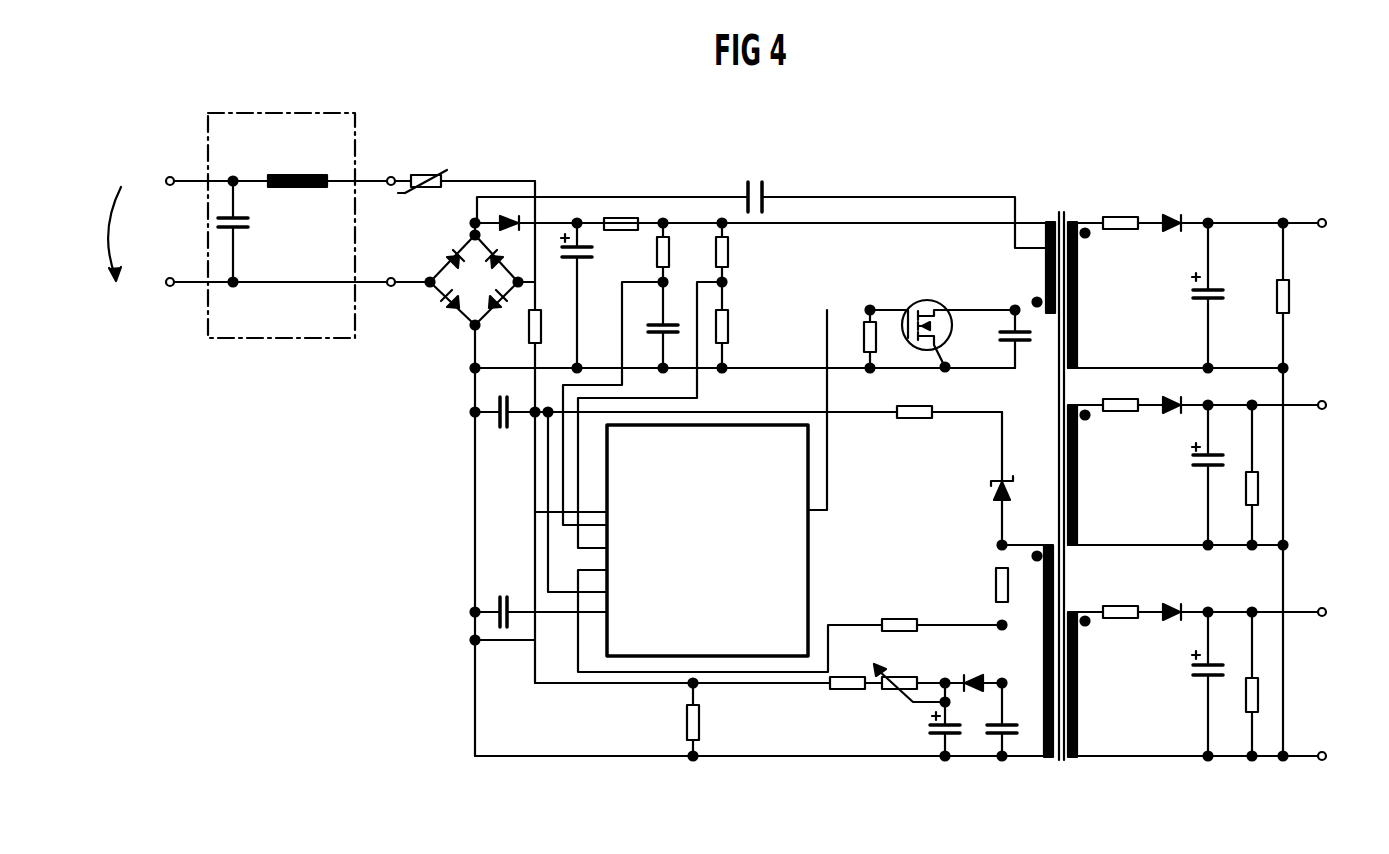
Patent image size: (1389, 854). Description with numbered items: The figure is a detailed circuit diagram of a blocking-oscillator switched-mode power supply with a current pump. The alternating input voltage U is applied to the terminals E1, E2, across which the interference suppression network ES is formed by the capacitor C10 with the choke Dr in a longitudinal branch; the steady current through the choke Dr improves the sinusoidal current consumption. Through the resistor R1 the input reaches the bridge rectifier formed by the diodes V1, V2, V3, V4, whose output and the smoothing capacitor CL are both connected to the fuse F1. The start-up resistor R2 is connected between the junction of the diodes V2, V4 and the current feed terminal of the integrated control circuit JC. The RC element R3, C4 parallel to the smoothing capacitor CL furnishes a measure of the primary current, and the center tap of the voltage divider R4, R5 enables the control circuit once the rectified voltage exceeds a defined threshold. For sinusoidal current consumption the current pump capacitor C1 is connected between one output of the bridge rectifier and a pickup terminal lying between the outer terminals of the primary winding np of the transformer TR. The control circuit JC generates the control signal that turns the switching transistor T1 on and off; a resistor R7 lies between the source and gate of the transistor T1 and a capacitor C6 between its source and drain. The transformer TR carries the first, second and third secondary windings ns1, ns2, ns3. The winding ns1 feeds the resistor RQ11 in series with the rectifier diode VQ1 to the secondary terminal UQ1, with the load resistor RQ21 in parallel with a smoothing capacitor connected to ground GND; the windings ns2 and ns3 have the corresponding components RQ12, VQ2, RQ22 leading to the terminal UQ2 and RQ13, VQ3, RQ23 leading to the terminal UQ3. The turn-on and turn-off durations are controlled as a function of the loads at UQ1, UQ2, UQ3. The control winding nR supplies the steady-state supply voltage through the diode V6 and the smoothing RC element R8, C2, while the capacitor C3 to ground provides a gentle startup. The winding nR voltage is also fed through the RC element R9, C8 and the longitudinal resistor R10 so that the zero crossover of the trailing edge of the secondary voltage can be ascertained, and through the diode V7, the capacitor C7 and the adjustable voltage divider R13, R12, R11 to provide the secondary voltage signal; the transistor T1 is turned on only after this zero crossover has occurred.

The input voltage U is at (133, 234).
The terminal E1 is at (274, 162).
The terminal E2 is at (274, 302).
The interference suppression network ES is at (281, 204).
The choke Dr is at (297, 161).
The capacitor C10 is at (254, 232).
The resistor R1 is at (461, 209).
The rectifier diode V1 is at (447, 250).
The rectifier diode V2 is at (505, 236).
The rectifier diode V3 is at (447, 312).
The rectifier diode V4 is at (496, 314).
The start-up resistor R2 is at (551, 330).
The smoothing capacitor CL is at (570, 296).
The fuse F1 is at (620, 241).
The resistor R3 is at (677, 253).
The resistor R4 is at (736, 253).
The capacitor C4 is at (650, 327).
The resistor R5 is at (736, 327).
The capacitor C1 is at (895, 192).
The switching transistor T1 is at (928, 300).
The resistor R7 is at (854, 339).
The capacitor C6 is at (1001, 337).
The transformer TR is at (1061, 469).
The primary winding np is at (1035, 267).
The first secondary winding ns1 is at (1195, 295).
The second secondary winding ns2 is at (1195, 475).
The third secondary winding ns3 is at (1195, 684).
The secondary winding nR is at (1034, 651).
The resistor RQ11 is at (1125, 245).
The rectifier diode VQ1 is at (1177, 244).
The load resistor RQ21 is at (1307, 490).
The secondary terminal UQ1 is at (1340, 216).
The resistor RQ12 is at (1117, 426).
The rectifier diode VQ2 is at (1169, 424).
The load resistor RQ22 is at (1266, 488).
The secondary terminal UQ2 is at (1342, 402).
The resistor RQ13 is at (1113, 593).
The rectifier diode VQ3 is at (1165, 633).
The load resistor RQ23 is at (1263, 696).
The secondary terminal UQ3 is at (1341, 606).
The ground GND is at (1344, 754).
The capacitor C2 is at (737, 429).
The capacitor C3 is at (539, 602).
The resistor R8 is at (914, 428).
The diode V6 is at (1001, 481).
The resistor R9 is at (987, 599).
The longitudinal resistor R10 is at (790, 621).
The resistor R11 is at (673, 720).
The resistor R12 is at (846, 702).
The adjustable resistor R13 is at (912, 675).
The diode V7 is at (974, 663).
The capacitor C7 is at (931, 722).
The capacitor C8 is at (1010, 722).
The integrated control circuit JC is at (691, 550).